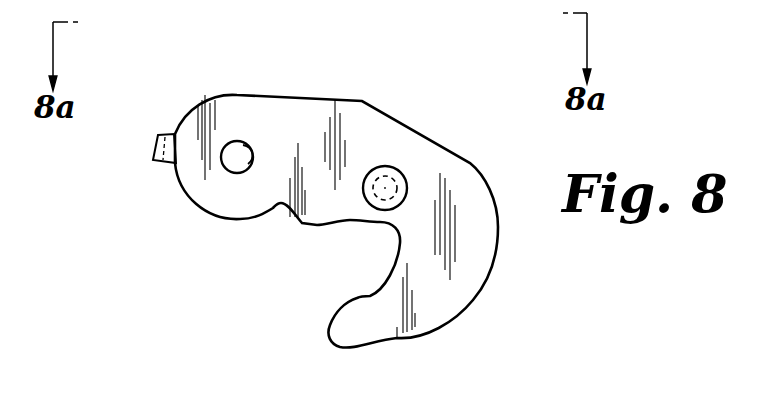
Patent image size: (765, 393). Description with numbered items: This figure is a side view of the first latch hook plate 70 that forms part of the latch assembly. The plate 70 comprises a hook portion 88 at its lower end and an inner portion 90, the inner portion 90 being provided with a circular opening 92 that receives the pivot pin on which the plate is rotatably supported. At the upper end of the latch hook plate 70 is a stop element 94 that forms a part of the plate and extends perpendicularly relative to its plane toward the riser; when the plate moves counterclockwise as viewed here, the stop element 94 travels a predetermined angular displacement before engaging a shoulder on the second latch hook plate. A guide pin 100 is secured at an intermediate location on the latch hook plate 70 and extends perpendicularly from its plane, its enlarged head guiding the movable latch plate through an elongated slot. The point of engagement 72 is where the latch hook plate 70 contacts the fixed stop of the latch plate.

The first latch hook plate 70 is at (465, 190).
The point of engagement 72 is at (302, 226).
The hook portion 88 is at (369, 297).
The inner portion 90 is at (229, 117).
The circular opening 92 is at (243, 145).
The stop element 94 is at (157, 145).
The guide pin 100 is at (393, 167).